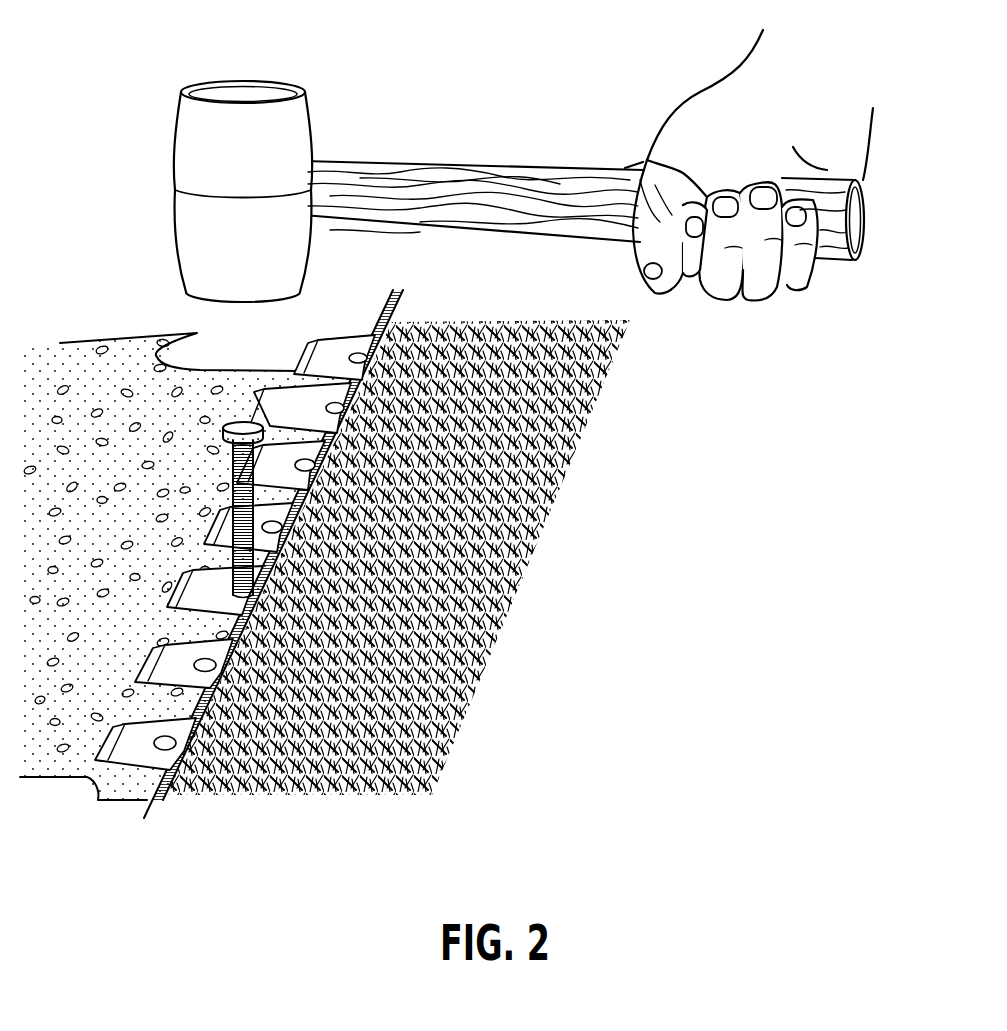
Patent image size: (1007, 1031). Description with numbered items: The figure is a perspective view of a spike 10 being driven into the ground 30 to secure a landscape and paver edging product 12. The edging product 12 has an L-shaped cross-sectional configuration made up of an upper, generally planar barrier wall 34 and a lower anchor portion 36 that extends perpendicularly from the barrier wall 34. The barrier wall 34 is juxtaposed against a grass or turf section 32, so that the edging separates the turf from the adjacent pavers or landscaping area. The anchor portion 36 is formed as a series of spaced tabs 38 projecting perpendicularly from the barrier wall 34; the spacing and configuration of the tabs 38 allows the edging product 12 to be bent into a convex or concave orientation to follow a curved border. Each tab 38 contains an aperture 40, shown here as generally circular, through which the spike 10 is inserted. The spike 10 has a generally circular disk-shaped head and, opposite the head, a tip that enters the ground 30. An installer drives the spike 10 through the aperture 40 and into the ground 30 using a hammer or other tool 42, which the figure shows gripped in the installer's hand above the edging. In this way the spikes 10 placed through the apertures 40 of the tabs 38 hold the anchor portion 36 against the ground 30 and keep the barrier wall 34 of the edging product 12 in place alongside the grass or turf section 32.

The spike 10 is at (245, 418).
The landscape and paver edging 12 is at (333, 342).
The ground 30 is at (134, 521).
The grass or turf section 32 is at (422, 565).
The barrier wall 34 is at (170, 780).
The anchor portion 36 is at (130, 776).
The tab 38 is at (163, 663).
The aperture 40 is at (358, 350).
The hammer or tool 42 is at (457, 172).